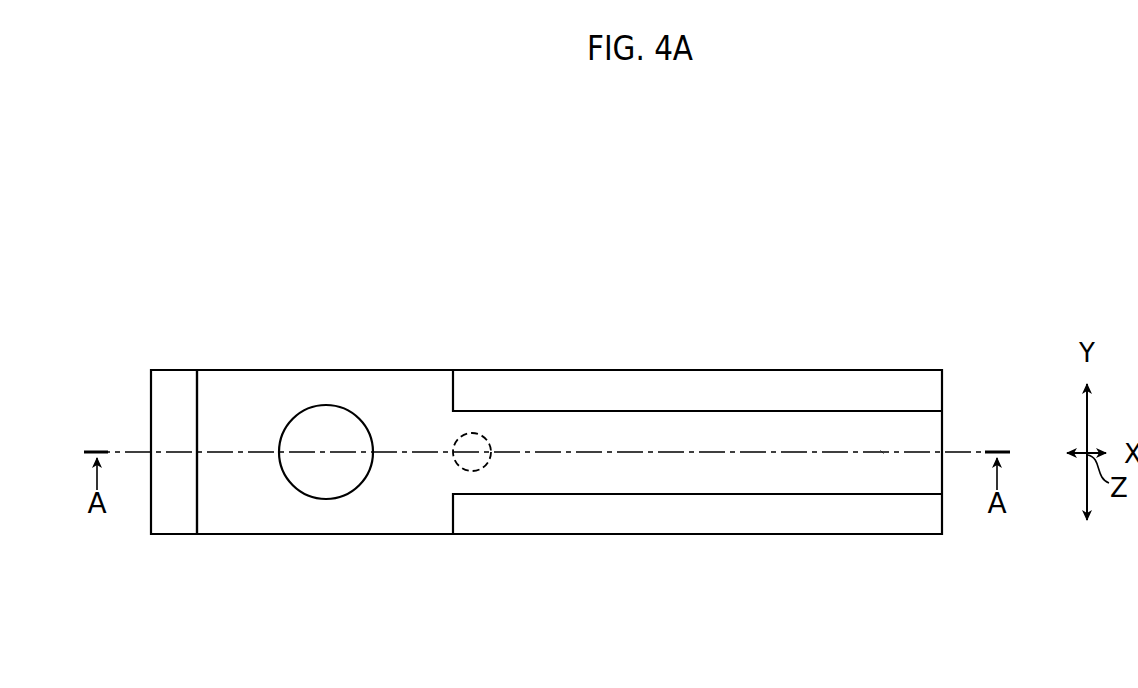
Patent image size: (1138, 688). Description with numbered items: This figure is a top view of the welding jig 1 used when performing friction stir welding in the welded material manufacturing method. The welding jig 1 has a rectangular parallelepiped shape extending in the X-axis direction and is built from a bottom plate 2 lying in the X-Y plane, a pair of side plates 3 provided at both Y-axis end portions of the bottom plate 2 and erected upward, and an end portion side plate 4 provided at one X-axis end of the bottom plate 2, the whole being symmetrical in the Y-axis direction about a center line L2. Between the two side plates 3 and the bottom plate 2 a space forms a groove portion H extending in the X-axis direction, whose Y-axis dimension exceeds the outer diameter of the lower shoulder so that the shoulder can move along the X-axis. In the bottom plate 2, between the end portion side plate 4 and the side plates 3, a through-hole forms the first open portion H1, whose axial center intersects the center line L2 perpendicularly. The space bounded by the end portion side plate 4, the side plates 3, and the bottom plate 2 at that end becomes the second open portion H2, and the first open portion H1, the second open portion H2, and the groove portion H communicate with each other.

The welding jig 1 is at (920, 345).
The bottom plate 2 is at (405, 500).
The side plates 3 is at (789, 395).
The end portion side plate 4 is at (172, 404).
The groove portion H is at (661, 468).
The first open portion H1 is at (287, 473).
The second open portion H2 is at (198, 500).
The center line L2 is at (882, 452).